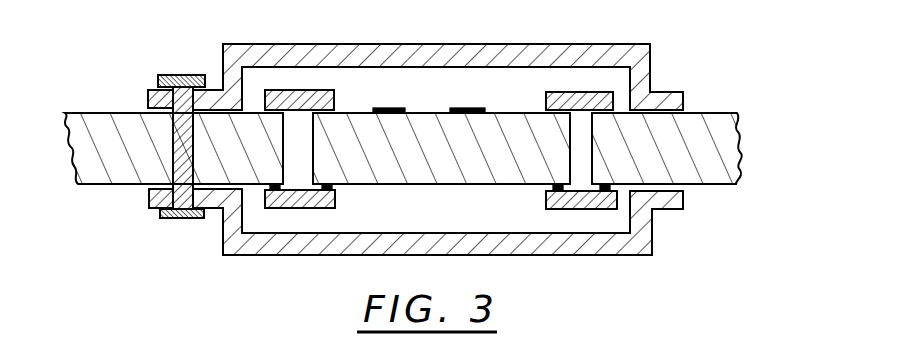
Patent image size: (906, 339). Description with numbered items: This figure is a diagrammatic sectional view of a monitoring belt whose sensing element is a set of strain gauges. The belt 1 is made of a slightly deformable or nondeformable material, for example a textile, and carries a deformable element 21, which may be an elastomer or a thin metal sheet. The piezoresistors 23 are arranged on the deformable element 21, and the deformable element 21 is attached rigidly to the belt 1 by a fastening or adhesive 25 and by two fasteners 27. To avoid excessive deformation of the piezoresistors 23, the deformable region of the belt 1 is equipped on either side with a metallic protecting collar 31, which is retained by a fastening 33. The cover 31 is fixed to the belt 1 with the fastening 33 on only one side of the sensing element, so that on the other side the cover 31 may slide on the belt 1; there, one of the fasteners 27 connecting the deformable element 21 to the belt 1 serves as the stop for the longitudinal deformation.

The belt 1 is at (107, 117).
The deformable element 21 is at (516, 118).
The piezoresistors 23 is at (387, 108).
The fastening or adhesive 25 is at (260, 190).
The fasteners 27 is at (317, 90).
The metallic protecting collar 31 is at (465, 47).
The fastening 33 is at (178, 222).